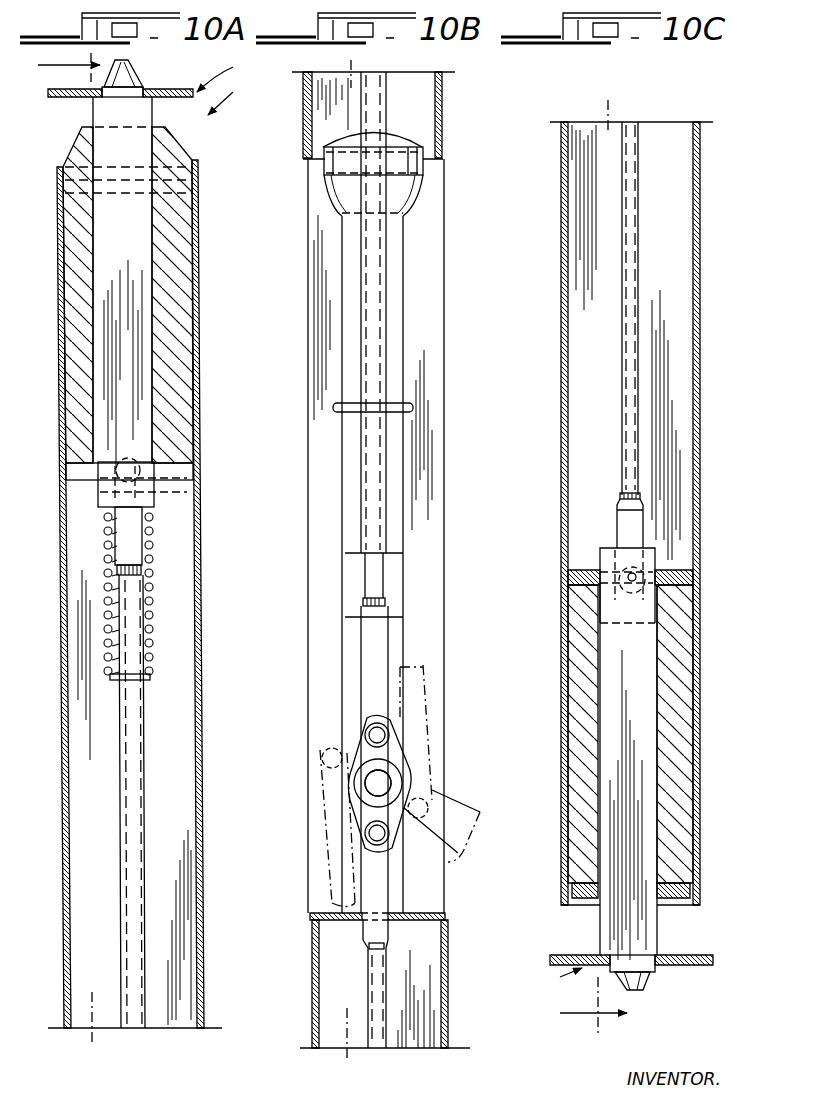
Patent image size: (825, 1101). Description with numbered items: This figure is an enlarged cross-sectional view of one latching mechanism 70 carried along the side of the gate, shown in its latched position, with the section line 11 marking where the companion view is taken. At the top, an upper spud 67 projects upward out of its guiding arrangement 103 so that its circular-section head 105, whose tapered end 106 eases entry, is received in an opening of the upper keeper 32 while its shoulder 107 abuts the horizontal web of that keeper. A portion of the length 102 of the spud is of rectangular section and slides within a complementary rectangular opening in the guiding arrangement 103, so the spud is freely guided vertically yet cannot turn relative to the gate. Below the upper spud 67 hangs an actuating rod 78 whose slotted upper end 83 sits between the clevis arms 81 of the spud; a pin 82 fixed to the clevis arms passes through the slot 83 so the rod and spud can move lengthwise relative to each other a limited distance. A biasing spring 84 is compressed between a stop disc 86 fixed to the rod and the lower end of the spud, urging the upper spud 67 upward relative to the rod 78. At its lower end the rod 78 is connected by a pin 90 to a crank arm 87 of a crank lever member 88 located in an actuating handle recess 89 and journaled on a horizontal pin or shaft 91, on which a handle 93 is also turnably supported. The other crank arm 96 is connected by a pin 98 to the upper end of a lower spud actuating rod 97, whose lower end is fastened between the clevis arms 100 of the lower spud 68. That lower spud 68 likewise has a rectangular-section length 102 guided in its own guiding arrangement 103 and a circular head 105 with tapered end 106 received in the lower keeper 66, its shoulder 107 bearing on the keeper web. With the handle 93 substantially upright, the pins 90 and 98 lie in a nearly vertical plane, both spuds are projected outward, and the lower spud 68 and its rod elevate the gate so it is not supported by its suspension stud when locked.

In FIG. 10A, the section line 11— 11 is at (69, 72).
In FIG. 10C, the section line 11— 11 is at (593, 1009).
In FIG. 10A, the keeper 32 is at (230, 70).
In FIG. 10C, the keeper 66 is at (558, 982).
In FIG. 10A, the upper spud 67 is at (152, 108).
In FIG. 10C, the lower spud 68 is at (658, 928).
In FIG. 10A, the latching mechanism 70 is at (235, 96).
In FIG. 10A, the actuating rod 78 is at (143, 797).
In FIG. 10B, the actuating rod 78 is at (372, 112).
In FIG. 10A, the clevis arms 81 is at (105, 492).
In FIG. 10A, the pin 82 is at (188, 468).
In FIG. 10A, the slotted upper end 83 is at (190, 492).
In FIG. 10A, the biasing spring 84 is at (148, 618).
In FIG. 10A, the stop disc 86 is at (150, 677).
In FIG. 10B, the crank arm 87 is at (390, 747).
In FIG. 10B, the crank lever member 88 is at (393, 785).
In FIG. 10B, the actuating handle recess 89 is at (423, 643).
In FIG. 10B, the pin 90 is at (380, 733).
In FIG. 10B, the pin or shaft 91 is at (380, 783).
In FIG. 10B, the handle 93 is at (375, 457).
In FIG. 10B, the crank arm 96 is at (375, 814).
In FIG. 10B, the lower spud actuating rod 97 is at (382, 1038).
In FIG. 10C, the lower spud actuating rod 97 is at (630, 127).
In FIG. 10B, the pin 98 is at (367, 840).
In FIG. 10C, the clevis arms 100 is at (643, 567).
In FIG. 10A, the portion of the length of rectangular section 102 is at (138, 233).
In FIG. 10C, the portion of the length of rectangular section 102 is at (610, 745).
In FIG. 10A, the guiding arrangement 103 is at (177, 338).
In FIG. 10C, the guiding arrangement 103 is at (590, 817).
In FIG. 10A, the circular section 105 is at (133, 89).
In FIG. 10C, the circular section 105 is at (640, 962).
In FIG. 10A, the tapered end 106 is at (125, 60).
In FIG. 10C, the tapered end 106 is at (630, 990).
In FIG. 10A, the shoulder 107 is at (93, 97).
In FIG. 10C, the shoulder 107 is at (663, 955).